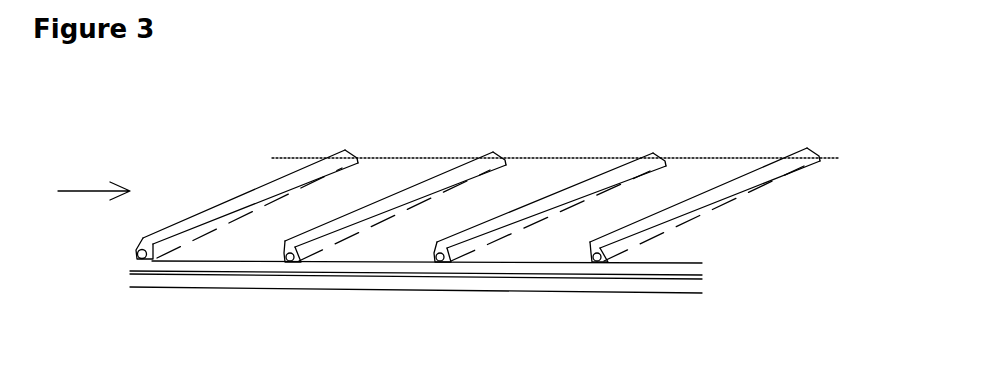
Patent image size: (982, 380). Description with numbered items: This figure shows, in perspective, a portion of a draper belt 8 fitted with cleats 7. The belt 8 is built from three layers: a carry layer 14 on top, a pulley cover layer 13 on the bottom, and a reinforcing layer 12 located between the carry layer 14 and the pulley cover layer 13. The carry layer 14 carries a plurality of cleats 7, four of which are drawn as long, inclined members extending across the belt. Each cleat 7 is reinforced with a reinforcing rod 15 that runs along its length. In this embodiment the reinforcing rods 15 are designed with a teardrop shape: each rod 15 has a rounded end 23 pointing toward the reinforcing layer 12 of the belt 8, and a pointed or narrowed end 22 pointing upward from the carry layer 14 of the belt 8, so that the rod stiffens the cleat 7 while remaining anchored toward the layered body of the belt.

The cleat 7 is at (264, 188).
The draper belt 8 is at (84, 190).
The reinforcing layer 12 is at (510, 273).
The pulley cover layer 13 is at (222, 280).
The carry layer 14 is at (633, 203).
The reinforcing rod 15 is at (440, 258).
The pointed or narrowed end 22 is at (137, 249).
The rounded end 23 is at (137, 262).